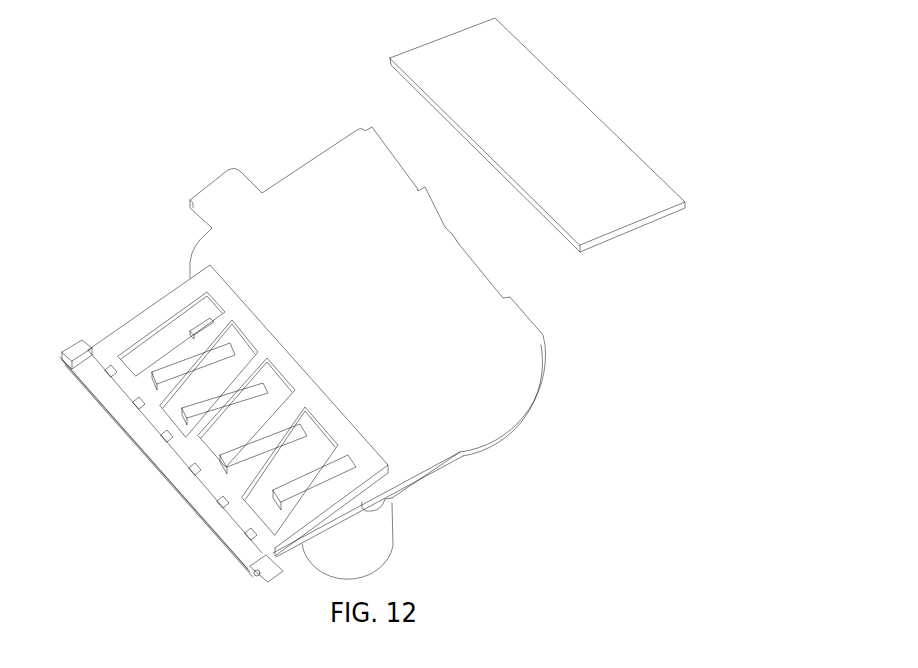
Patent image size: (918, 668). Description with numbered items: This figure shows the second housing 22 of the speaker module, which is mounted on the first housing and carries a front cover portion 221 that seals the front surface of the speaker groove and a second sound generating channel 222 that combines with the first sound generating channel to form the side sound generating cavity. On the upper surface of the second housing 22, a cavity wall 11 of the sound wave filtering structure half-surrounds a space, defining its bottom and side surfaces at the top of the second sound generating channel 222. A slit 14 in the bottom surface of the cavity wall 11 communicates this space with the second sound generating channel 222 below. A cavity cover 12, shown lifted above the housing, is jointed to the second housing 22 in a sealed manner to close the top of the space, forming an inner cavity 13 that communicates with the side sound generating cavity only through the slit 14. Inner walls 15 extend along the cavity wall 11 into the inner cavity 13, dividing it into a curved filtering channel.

The cavity wall 11 is at (177, 313).
The cavity cover 12 is at (563, 195).
The inner cavity 13 is at (307, 460).
The slit 14 is at (200, 327).
The inner walls 15 is at (267, 427).
The second housing 22 is at (338, 340).
The front cover portion 221 is at (325, 258).
The second sound generating channel 222 is at (388, 537).